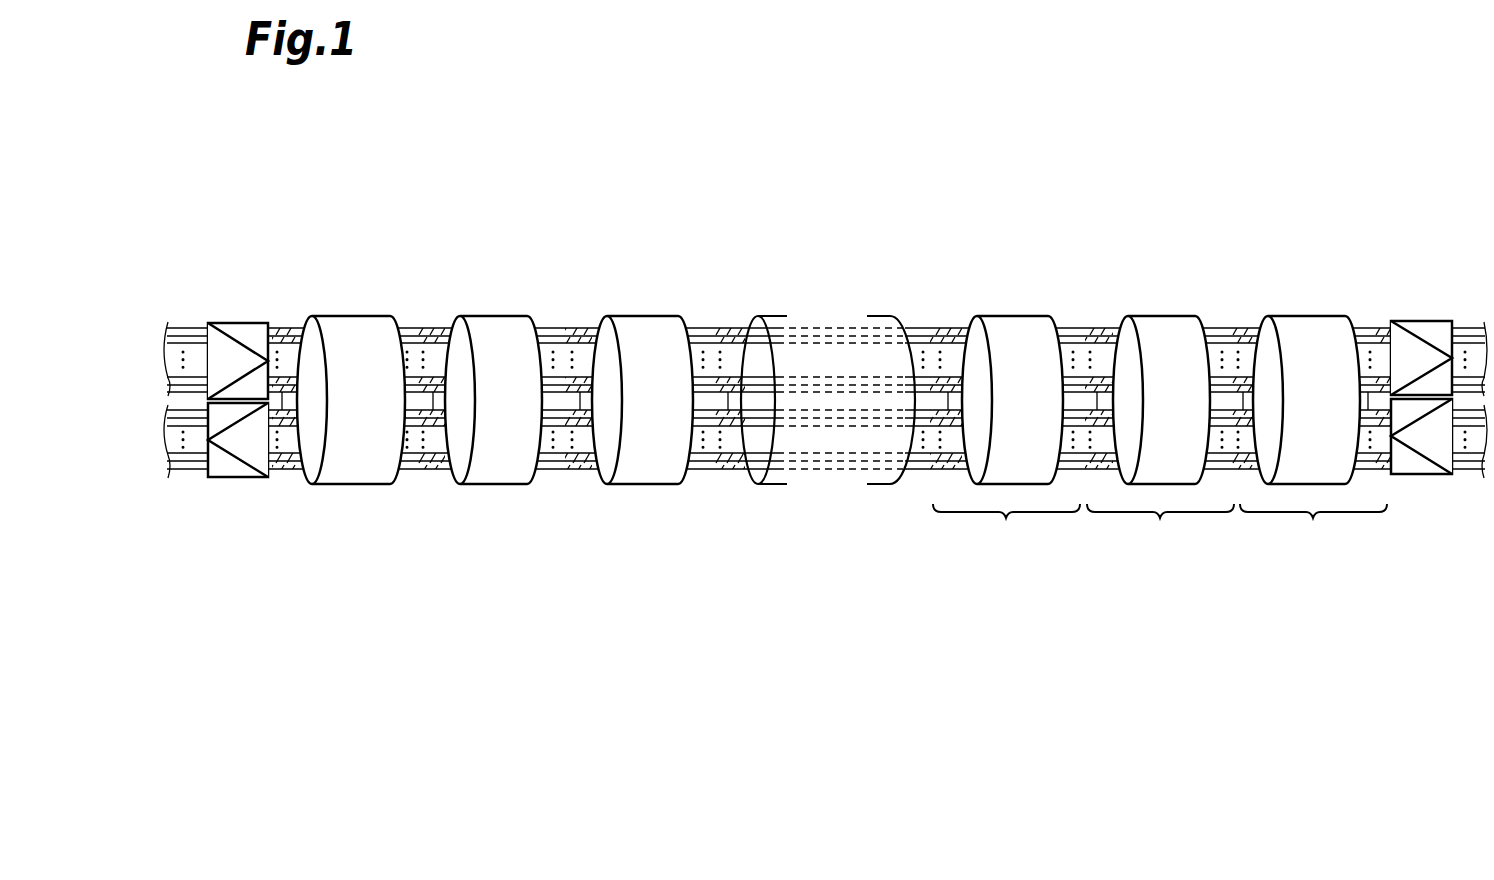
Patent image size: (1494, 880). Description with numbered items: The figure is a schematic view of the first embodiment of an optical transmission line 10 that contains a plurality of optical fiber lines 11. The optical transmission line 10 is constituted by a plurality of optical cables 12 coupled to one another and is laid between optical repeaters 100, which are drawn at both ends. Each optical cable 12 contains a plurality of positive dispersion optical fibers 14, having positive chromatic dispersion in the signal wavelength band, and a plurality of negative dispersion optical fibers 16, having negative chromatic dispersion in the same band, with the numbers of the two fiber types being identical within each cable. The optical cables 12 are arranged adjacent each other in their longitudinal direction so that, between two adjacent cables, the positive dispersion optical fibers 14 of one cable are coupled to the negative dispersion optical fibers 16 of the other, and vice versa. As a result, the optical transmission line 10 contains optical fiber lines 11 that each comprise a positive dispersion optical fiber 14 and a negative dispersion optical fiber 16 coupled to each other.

The optical transmission line 10 is at (1234, 169).
The optical repeater 100 is at (1420, 475).
The optical fiber line 11 is at (938, 452).
The optical cable 12 is at (1160, 531).
The positive dispersion optical fiber 14 is at (1239, 327).
The negative dispersion optical fiber 16 is at (1277, 410).